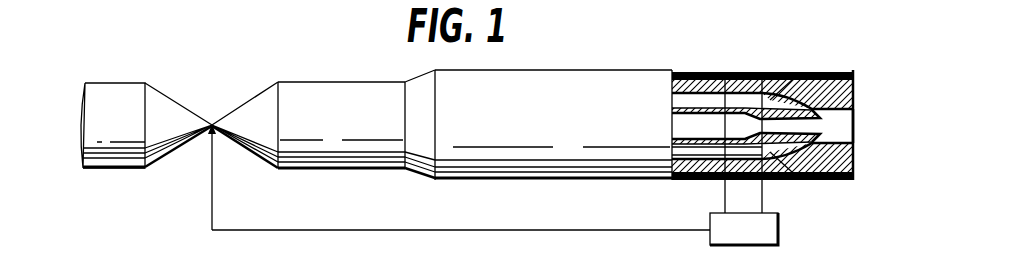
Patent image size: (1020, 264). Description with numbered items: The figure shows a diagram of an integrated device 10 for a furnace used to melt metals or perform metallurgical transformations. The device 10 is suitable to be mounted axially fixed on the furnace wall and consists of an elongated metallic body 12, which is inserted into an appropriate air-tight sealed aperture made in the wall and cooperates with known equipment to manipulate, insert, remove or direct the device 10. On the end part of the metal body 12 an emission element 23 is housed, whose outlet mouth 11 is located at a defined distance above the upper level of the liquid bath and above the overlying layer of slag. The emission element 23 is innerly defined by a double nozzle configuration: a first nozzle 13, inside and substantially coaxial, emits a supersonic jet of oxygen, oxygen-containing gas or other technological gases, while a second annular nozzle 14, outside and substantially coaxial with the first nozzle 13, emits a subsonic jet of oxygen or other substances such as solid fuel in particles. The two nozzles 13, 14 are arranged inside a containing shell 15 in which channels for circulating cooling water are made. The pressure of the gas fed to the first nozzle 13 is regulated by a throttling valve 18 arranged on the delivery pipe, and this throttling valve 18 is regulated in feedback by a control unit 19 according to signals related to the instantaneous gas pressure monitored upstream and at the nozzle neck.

The device 10 is at (548, 57).
The outlet mouth 11 is at (835, 125).
The metallic body 12 is at (467, 146).
The first nozzle 13 is at (799, 72).
The second annular nozzle 14 is at (768, 72).
The containing shell 15 is at (722, 72).
The throttling valve 18 is at (236, 110).
The control unit 19 is at (710, 214).
The emission element 23 is at (859, 90).